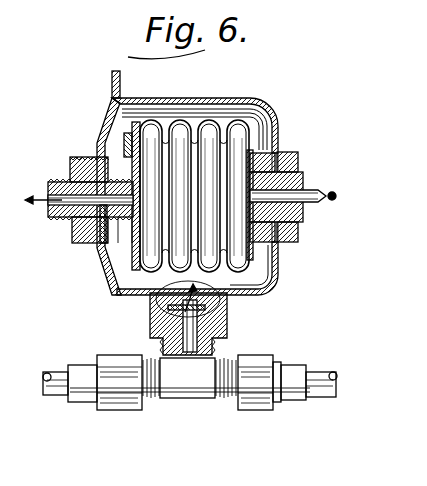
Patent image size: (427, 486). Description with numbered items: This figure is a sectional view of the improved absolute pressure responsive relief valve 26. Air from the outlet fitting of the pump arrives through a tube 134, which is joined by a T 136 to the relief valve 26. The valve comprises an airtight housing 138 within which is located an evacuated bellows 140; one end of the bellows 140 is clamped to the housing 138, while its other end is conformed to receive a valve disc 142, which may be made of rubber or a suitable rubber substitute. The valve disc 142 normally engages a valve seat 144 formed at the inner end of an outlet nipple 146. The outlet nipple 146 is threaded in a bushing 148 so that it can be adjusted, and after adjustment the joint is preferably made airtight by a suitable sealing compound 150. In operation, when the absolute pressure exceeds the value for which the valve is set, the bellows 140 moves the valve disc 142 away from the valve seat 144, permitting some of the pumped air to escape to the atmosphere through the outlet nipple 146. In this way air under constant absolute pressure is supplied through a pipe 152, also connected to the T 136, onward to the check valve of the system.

The pressure relief valve 26 is at (280, 121).
The tube 134 is at (318, 373).
The T 136 is at (187, 388).
The airtight housing 138 is at (279, 270).
The evacuated bellows 140 is at (188, 124).
The valve disc 142 is at (123, 150).
The valve seat 144 is at (73, 179).
The outlet nipple 146 is at (50, 183).
The bushing 148 is at (90, 243).
The sealing compound 150 is at (66, 222).
The pipe 152 is at (57, 373).